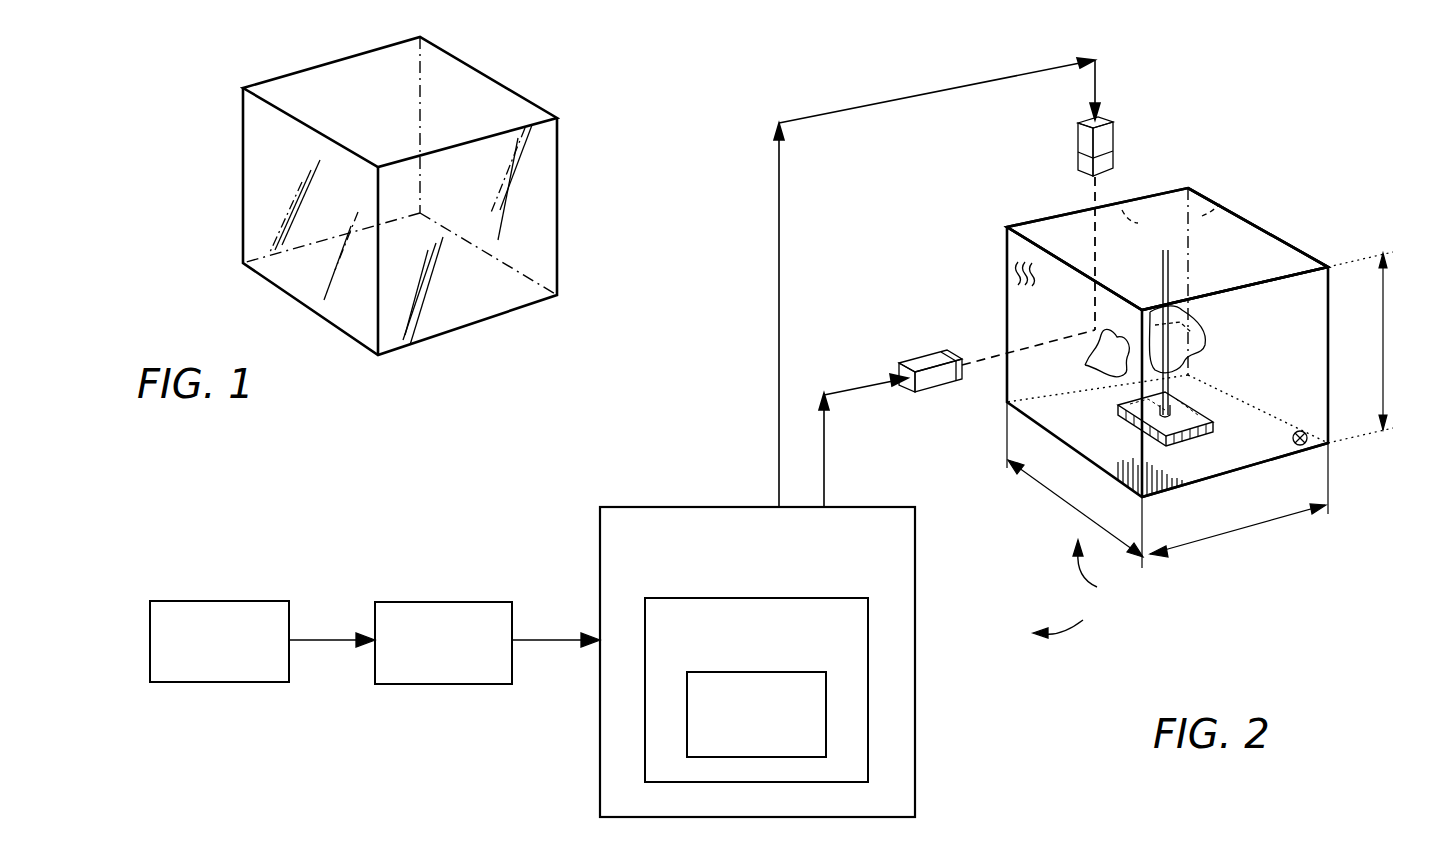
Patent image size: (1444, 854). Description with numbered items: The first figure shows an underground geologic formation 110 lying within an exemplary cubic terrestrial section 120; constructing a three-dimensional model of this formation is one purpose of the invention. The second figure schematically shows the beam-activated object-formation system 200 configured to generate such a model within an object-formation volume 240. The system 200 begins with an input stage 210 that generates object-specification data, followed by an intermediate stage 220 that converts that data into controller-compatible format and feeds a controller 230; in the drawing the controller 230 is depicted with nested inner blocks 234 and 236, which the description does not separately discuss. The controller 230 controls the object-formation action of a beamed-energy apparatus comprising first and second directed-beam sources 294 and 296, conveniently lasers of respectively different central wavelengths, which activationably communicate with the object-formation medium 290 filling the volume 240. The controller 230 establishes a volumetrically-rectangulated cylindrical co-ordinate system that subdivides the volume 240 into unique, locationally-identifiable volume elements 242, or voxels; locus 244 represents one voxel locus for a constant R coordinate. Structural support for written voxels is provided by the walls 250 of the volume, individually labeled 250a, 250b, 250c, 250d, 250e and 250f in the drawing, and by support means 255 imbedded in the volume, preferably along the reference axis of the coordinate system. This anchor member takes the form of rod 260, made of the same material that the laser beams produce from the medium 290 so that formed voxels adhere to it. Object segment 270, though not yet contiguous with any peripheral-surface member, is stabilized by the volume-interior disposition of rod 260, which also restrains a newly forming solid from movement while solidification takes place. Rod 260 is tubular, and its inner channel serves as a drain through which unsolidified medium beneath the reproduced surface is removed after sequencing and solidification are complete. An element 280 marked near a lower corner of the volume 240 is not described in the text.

In FIG. 1, the underground geologic formation 110 is at (520, 228).
In FIG. 1, the cubic terrestrial section 120 is at (497, 80).
In FIG. 2, the beam-activated object-formation system 200 is at (1084, 589).
In FIG. 2, the input stage 210 is at (268, 600).
In FIG. 2, the intermediate stage 220 is at (492, 602).
In FIG. 2, the controller 230 is at (915, 557).
In FIG. 2, the control computer 234 is at (868, 655).
In FIG. 2, the formation memory 236 is at (826, 713).
In FIG. 2, the object-formation volume 240 is at (1277, 253).
In FIG. 2, the volume elements 242 is at (1171, 466).
In FIG. 2, the locus 244 is at (1122, 413).
In FIG. 2, the walls 250 is at (1190, 188).
In FIG. 2, the cube face 250a is at (1237, 228).
In FIG. 2, the cube face 250b is at (1250, 415).
In FIG. 2, the cube face 250c is at (1230, 307).
In FIG. 2, the cube face 250d is at (1055, 273).
In FIG. 2, the cube face 250e is at (1118, 206).
In FIG. 2, the cube face 250f is at (1217, 205).
In FIG. 2, the support means 255 is at (1178, 418).
In FIG. 2, the anchor rod 260 is at (1167, 377).
In FIG. 2, the object segment 270 is at (1115, 347).
In FIG. 2, the reference point 280 is at (1298, 434).
In FIG. 2, the object-formation medium 290 is at (1013, 265).
In FIG. 2, the first directed-beam source 294 is at (1085, 145).
In FIG. 2, the second directed-beam source 296 is at (930, 362).